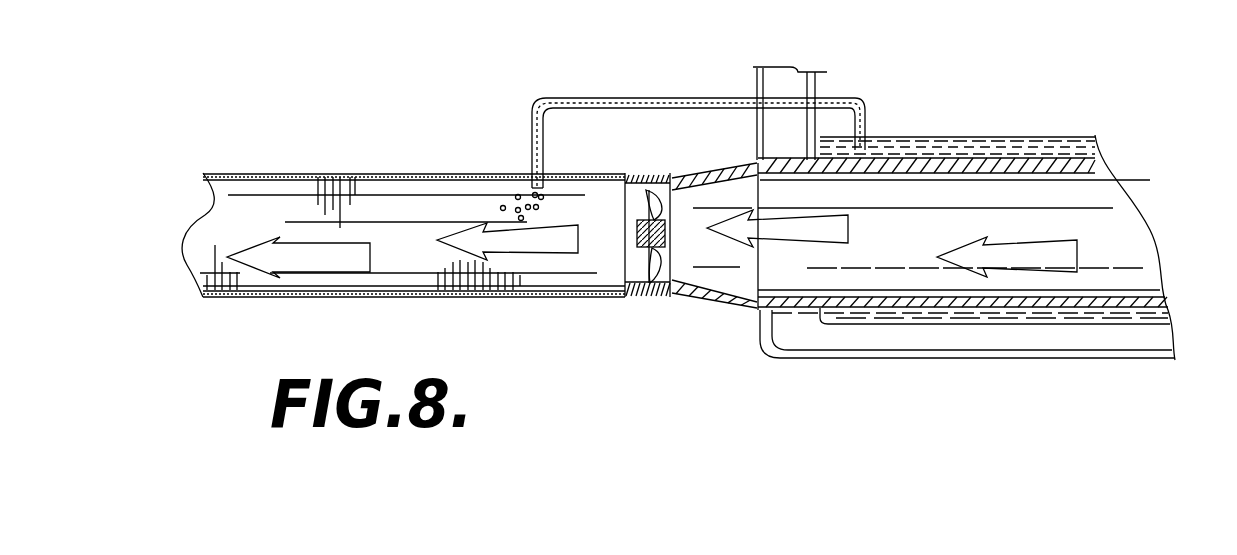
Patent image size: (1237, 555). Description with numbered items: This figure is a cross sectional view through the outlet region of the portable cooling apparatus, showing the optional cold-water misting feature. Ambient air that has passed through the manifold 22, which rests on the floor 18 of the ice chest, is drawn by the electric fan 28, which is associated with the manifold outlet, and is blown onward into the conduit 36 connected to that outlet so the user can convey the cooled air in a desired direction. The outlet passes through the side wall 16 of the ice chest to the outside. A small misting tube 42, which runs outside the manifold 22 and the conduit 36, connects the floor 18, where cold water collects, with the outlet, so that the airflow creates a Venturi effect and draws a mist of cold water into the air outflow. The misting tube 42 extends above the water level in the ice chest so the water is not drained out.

The conduit 36 is at (388, 172).
The misting tube 42 is at (575, 100).
The side wall 16 is at (780, 78).
The electric fan 28 is at (633, 262).
The manifold 22 is at (1103, 235).
The floor 18 is at (1010, 337).